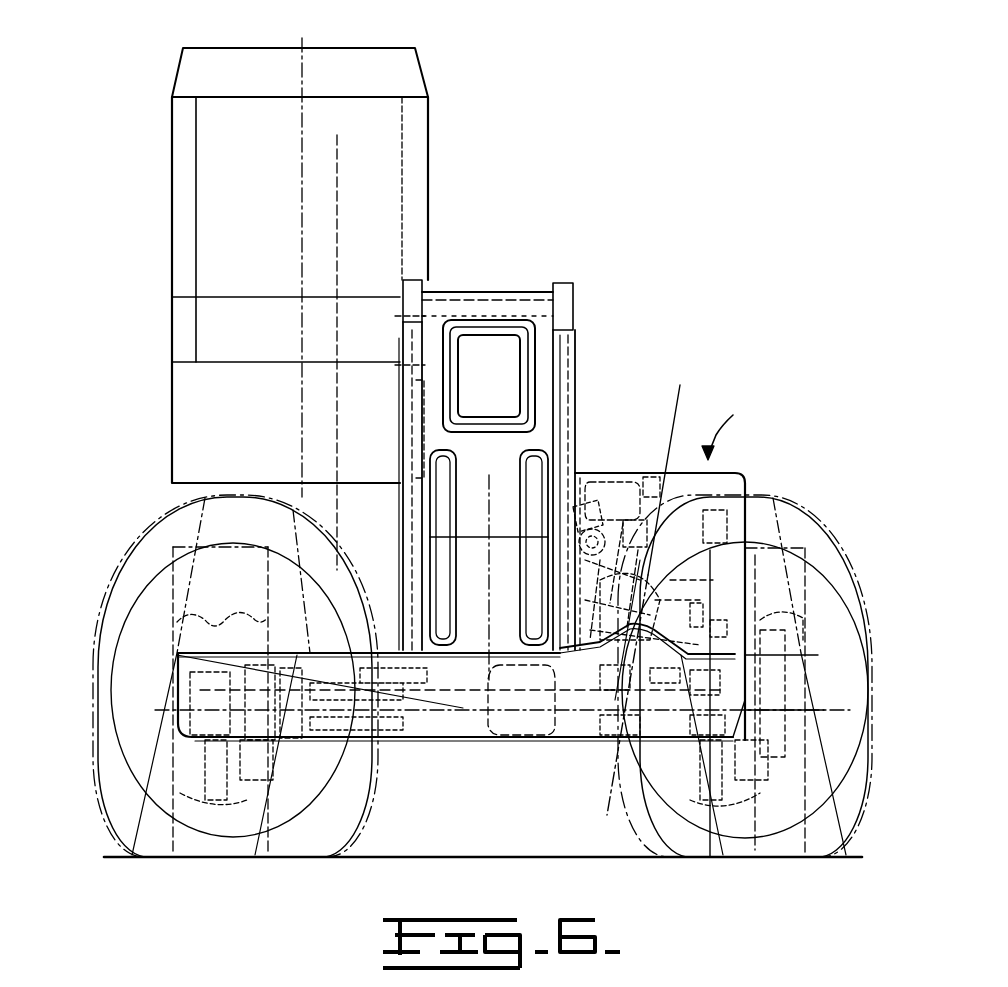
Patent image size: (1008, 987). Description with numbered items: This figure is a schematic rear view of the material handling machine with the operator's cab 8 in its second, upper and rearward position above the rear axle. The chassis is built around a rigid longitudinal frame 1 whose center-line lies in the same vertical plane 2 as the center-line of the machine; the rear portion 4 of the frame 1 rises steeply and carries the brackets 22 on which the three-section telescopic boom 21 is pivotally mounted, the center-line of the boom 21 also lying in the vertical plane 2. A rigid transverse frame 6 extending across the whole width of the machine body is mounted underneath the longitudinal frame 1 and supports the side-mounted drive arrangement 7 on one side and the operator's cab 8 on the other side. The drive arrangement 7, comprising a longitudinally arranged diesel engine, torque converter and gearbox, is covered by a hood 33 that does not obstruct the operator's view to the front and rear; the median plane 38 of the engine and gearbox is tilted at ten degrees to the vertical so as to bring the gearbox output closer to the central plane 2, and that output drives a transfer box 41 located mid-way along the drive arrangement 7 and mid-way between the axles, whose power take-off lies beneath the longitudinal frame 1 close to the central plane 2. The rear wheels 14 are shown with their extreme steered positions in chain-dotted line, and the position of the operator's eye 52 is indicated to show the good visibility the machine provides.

The longitudinal frame 1 is at (472, 640).
The vertical plane 2 is at (490, 500).
The rear portion of the frame 4 is at (552, 375).
The transverse frame 6 is at (430, 738).
The drive arrangement 7 is at (651, 521).
The operator's cab 8 is at (197, 73).
The rear wheels 14 is at (102, 793).
The telescopic boom 21 is at (540, 335).
The brackets 22 is at (410, 350).
The hood 33 is at (745, 473).
The median plane of the engine and gearbox 38 is at (607, 815).
The transfer box 41 is at (545, 730).
The operator's eye position 52 is at (349, 135).